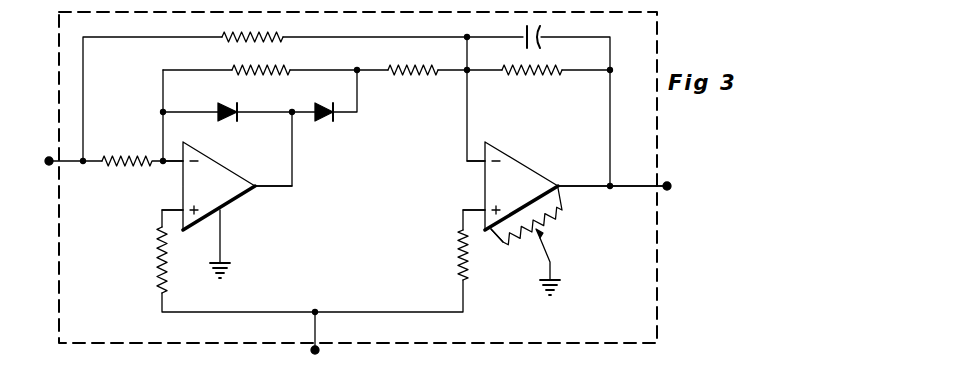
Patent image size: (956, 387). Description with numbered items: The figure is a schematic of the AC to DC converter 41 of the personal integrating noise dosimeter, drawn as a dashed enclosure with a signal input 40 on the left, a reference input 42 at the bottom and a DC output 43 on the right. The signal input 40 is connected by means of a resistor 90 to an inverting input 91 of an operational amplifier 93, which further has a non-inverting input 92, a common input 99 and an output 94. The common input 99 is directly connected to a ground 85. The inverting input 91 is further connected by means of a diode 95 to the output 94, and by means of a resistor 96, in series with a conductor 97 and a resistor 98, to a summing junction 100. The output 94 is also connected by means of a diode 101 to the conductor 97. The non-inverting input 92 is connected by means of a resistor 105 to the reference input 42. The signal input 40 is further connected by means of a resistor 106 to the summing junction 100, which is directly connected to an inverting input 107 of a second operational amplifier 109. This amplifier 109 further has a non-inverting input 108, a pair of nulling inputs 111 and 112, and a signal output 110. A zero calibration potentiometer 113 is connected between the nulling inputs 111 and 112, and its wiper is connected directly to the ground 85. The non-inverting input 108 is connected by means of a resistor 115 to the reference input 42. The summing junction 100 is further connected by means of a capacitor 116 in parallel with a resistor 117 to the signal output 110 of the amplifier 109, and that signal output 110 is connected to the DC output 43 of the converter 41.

The signal input 40 is at (45, 165).
The AC to DC converter 41 is at (657, 300).
The reference input 42 is at (312, 353).
The DC output 43 is at (670, 183).
The ground 85 is at (230, 263).
The resistor 90 is at (130, 170).
The inverting input 91 is at (182, 160).
The non-inverting input 92 is at (183, 208).
The operational amplifier 93 is at (226, 168).
The output 94 is at (256, 188).
The diode 95 is at (224, 108).
The resistor 96 is at (248, 66).
The conductor 97 is at (322, 70).
The resistor 98 is at (415, 64).
The common input 99 is at (221, 212).
The summing junction 100 is at (466, 73).
The diode 101 is at (318, 108).
The resistor 105 is at (155, 258).
The resistor 106 is at (268, 36).
The inverting input 107 is at (484, 158).
The non-inverting input 108 is at (484, 208).
The operational amplifier 109 is at (523, 163).
The signal output 110 is at (558, 184).
The nulling input 111 is at (493, 232).
The nulling input 112 is at (564, 190).
The zero calibration potentiometer 113 is at (548, 218).
The resistor 115 is at (458, 256).
The capacitor 116 is at (523, 28).
The resistor 117 is at (545, 68).